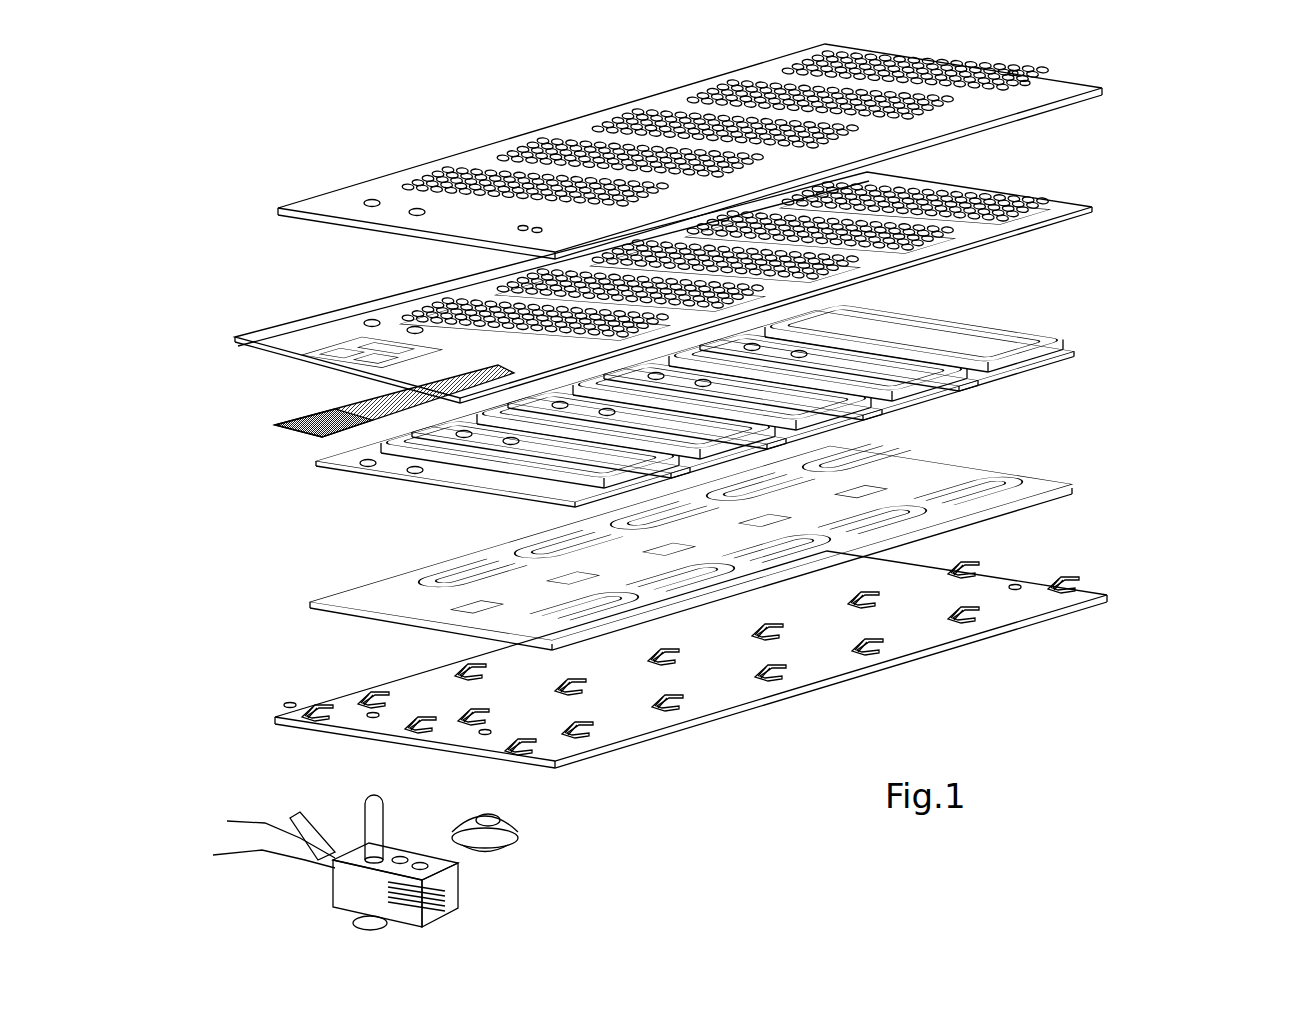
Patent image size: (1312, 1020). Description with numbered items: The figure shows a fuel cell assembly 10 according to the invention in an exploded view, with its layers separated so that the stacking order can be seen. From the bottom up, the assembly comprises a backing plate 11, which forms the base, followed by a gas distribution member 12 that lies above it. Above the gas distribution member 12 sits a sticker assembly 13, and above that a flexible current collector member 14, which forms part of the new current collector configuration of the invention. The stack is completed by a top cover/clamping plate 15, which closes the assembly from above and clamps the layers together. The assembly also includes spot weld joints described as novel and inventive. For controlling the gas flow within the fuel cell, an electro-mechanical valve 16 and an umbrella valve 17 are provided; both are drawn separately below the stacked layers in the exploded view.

The fuel cell assembly 10 is at (1200, 114).
The backing plate 11 is at (410, 690).
The gas distribution member 12 is at (995, 468).
The sticker assembly 13 is at (1052, 312).
The flexible current collector member 14 is at (286, 335).
The top cover/clamping plate 15 is at (472, 158).
The electro-mechanical valve 16 is at (284, 893).
The umbrella valve 17 is at (507, 817).